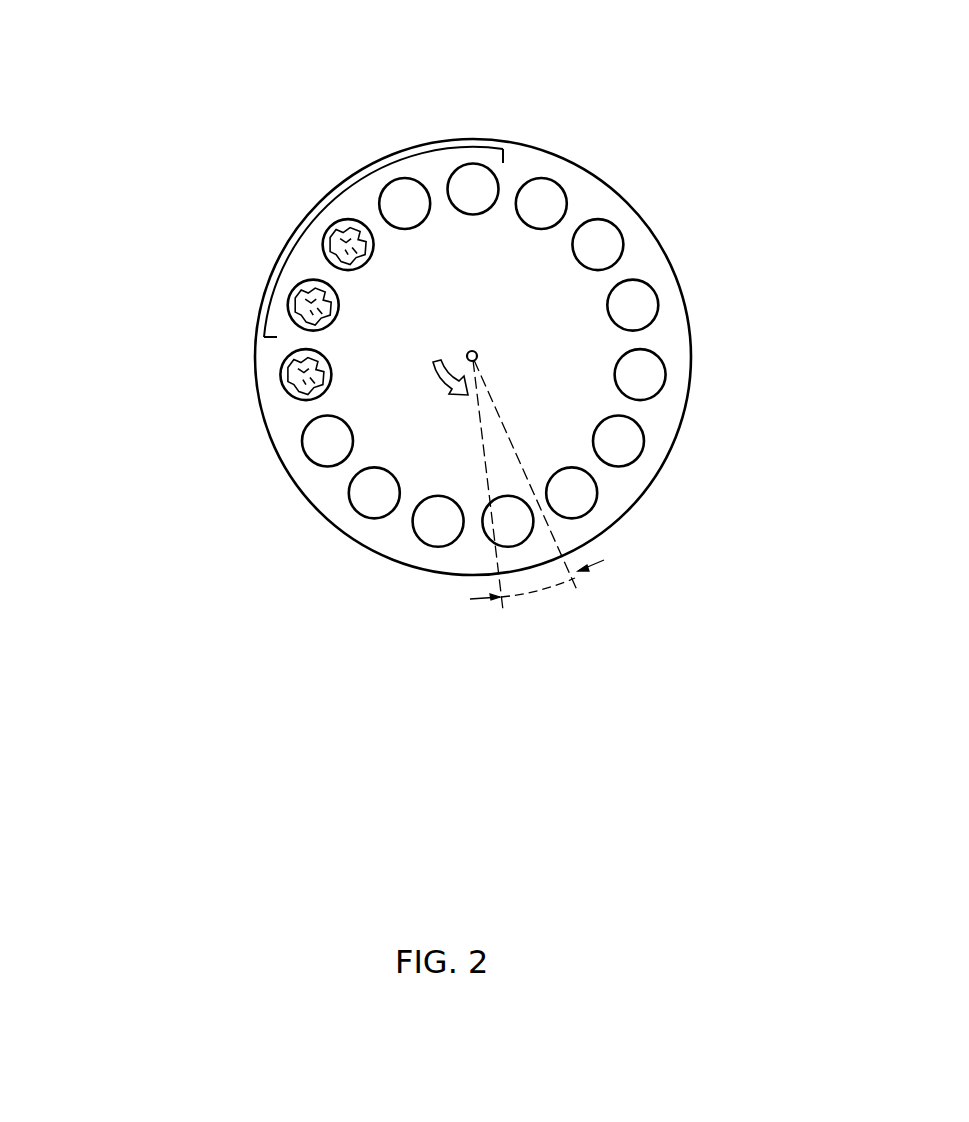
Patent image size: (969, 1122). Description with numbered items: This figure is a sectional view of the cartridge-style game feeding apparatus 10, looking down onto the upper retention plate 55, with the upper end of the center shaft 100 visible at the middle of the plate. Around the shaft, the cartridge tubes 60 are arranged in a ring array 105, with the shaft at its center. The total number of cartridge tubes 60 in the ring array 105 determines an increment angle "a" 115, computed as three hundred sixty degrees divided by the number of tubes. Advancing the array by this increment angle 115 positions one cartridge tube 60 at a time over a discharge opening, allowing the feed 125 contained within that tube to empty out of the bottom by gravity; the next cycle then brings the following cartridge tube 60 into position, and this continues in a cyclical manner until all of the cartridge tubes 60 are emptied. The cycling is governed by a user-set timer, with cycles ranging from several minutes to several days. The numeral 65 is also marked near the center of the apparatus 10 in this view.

The cartridge-style game feeding apparatus 10 is at (226, 518).
The upper retention plate 55 is at (533, 306).
The cartridge tubes 60 is at (480, 165).
The axis of rotation 65 is at (457, 397).
The center shaft 100 is at (474, 360).
The ring array 105 is at (318, 210).
The increment angle "a" 115 is at (602, 532).
The feed 125 is at (281, 372).